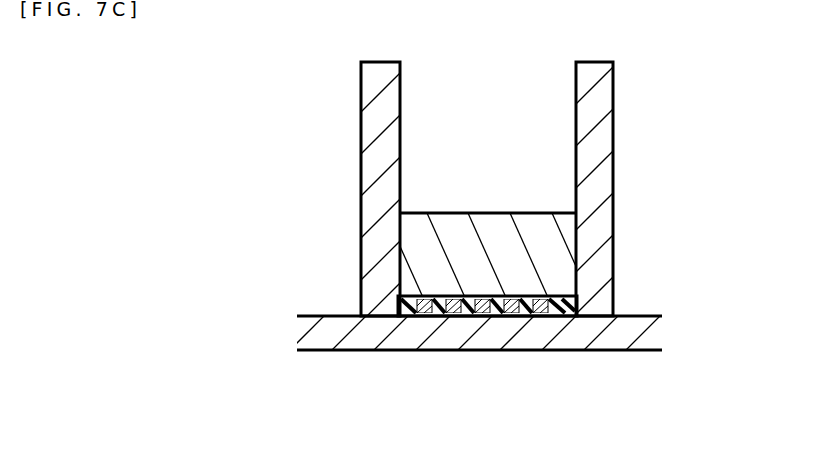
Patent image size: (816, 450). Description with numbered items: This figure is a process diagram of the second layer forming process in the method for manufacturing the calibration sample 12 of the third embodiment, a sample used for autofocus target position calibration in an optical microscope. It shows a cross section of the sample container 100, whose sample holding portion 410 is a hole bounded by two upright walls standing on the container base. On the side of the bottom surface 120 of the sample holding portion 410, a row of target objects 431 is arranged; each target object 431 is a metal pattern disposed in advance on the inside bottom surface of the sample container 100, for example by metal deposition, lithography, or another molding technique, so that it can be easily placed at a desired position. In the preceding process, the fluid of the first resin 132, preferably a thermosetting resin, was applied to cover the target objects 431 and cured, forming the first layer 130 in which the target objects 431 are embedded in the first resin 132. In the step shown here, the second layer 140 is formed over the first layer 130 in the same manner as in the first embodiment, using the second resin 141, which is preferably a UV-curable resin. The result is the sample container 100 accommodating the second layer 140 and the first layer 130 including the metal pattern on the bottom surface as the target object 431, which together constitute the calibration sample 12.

The calibration sample 12 is at (688, 126).
The sample container 100 is at (433, 351).
The sample holding portion 410 is at (500, 118).
The first resin 132 is at (573, 304).
The second layer 140 is at (420, 237).
The second resin 141 is at (487, 254).
The bottom surface 120 is at (556, 318).
The target object 431 is at (426, 296).
The first layer 130 is at (402, 312).